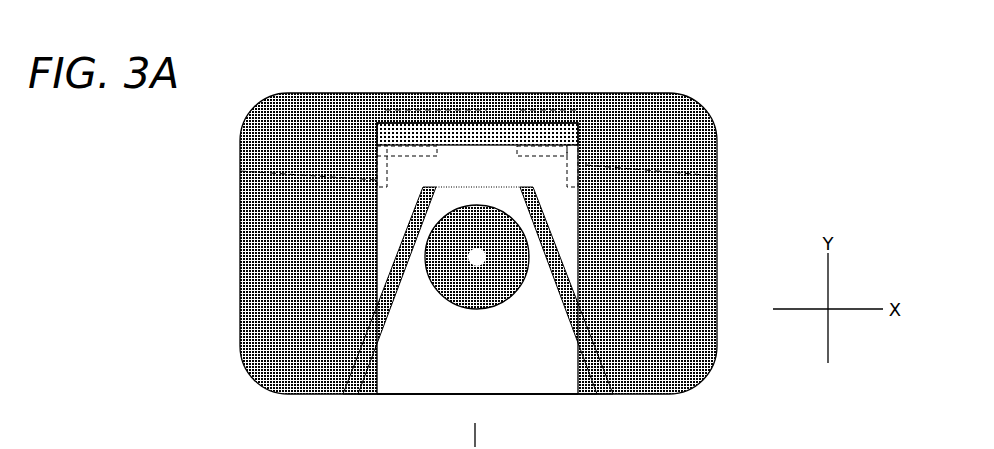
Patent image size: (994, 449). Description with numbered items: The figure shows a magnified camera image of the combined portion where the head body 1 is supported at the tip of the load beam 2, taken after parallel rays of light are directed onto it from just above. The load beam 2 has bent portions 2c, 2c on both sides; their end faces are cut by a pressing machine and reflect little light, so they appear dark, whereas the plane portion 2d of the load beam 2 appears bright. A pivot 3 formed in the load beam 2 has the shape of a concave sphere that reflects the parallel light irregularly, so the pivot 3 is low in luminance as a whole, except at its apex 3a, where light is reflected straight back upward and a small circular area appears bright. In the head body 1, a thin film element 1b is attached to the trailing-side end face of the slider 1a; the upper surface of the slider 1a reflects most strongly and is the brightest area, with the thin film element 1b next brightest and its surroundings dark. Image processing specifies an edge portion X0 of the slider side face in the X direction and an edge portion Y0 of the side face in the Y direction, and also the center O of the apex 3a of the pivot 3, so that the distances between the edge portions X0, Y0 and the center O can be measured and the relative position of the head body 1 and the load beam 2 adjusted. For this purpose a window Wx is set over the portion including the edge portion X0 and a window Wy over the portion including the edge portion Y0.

The head body 1 is at (718, 262).
The slider 1a is at (550, 166).
The thin film element 1b is at (484, 125).
The load beam 2 is at (456, 370).
The bent portions 2c is at (377, 333).
The plane portion 2d is at (527, 383).
The pivot 3 is at (522, 293).
The apex 3a is at (486, 310).
The center of the apex O is at (452, 303).
The edge portion in X direction X0 is at (377, 122).
The edge portion in Y direction Y0 is at (408, 124).
The window Wx is at (240, 171).
The window Wy is at (428, 92).